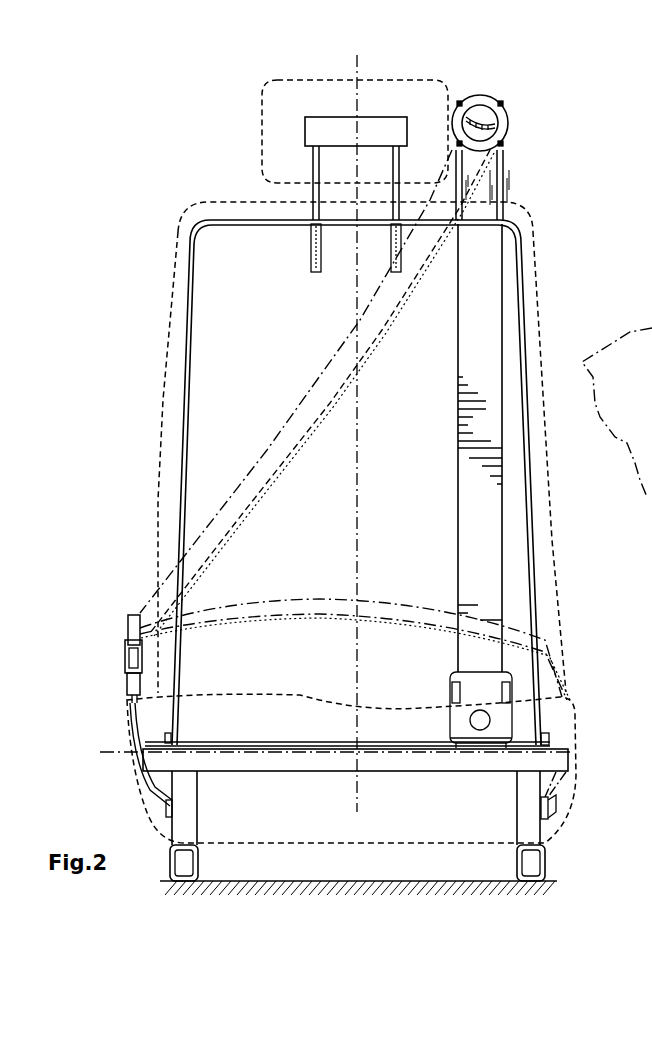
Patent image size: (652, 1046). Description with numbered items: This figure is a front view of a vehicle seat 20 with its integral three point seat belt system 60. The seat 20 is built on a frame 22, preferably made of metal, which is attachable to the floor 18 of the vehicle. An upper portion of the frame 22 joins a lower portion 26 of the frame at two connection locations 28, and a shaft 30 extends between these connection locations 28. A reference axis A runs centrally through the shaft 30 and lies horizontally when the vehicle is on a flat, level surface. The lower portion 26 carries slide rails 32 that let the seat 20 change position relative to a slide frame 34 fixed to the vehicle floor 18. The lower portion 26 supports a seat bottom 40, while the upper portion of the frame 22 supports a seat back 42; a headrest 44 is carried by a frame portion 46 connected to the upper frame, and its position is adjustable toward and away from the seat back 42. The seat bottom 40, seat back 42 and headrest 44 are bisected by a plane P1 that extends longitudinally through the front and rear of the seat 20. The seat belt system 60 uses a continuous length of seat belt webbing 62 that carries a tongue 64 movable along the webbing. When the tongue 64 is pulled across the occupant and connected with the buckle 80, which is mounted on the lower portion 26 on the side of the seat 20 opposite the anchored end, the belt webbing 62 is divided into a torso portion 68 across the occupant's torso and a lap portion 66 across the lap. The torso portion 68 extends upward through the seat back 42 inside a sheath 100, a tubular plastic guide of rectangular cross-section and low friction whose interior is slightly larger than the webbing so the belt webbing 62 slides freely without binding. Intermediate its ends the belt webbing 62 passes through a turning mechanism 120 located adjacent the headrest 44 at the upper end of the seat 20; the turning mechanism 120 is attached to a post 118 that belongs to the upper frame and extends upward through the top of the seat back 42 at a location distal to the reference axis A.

The floor 18 is at (272, 885).
The seat 20 is at (152, 246).
The frame 22 is at (560, 736).
The lower portion 26 is at (565, 760).
The connection locations 28 is at (530, 537).
The shaft 30 is at (228, 745).
The slide rails 32 is at (540, 865).
The slide frame 34 is at (520, 869).
The seat bottom 40 is at (563, 800).
The seat back 42 is at (175, 353).
The headrest 44 is at (280, 95).
The frame portion 46 is at (313, 193).
The seat belt system 60 is at (114, 656).
The seat belt webbing 62 is at (144, 590).
The tongue 64 is at (133, 615).
The lap portion 66 is at (383, 607).
The torso portion 68 is at (266, 446).
The buckle 80 is at (132, 683).
The sheath 100 is at (482, 247).
The post 118 is at (503, 188).
The turning mechanism 120 is at (514, 100).
The reference axis A is at (105, 747).
The plane P1 is at (357, 102).